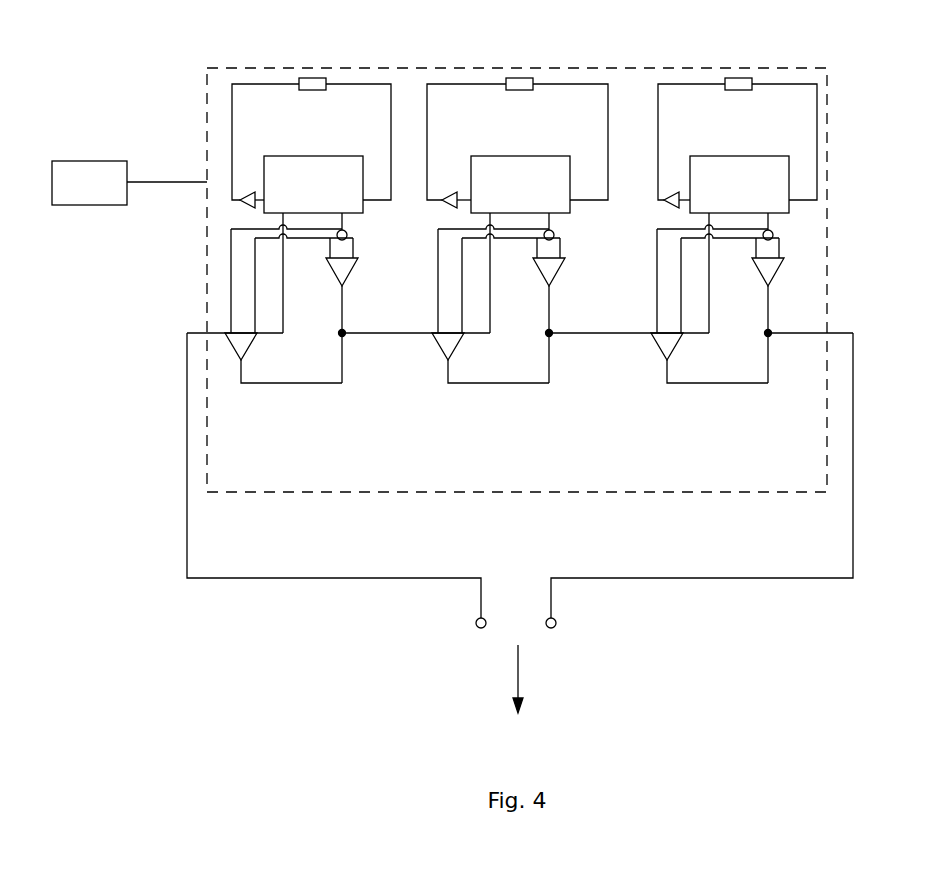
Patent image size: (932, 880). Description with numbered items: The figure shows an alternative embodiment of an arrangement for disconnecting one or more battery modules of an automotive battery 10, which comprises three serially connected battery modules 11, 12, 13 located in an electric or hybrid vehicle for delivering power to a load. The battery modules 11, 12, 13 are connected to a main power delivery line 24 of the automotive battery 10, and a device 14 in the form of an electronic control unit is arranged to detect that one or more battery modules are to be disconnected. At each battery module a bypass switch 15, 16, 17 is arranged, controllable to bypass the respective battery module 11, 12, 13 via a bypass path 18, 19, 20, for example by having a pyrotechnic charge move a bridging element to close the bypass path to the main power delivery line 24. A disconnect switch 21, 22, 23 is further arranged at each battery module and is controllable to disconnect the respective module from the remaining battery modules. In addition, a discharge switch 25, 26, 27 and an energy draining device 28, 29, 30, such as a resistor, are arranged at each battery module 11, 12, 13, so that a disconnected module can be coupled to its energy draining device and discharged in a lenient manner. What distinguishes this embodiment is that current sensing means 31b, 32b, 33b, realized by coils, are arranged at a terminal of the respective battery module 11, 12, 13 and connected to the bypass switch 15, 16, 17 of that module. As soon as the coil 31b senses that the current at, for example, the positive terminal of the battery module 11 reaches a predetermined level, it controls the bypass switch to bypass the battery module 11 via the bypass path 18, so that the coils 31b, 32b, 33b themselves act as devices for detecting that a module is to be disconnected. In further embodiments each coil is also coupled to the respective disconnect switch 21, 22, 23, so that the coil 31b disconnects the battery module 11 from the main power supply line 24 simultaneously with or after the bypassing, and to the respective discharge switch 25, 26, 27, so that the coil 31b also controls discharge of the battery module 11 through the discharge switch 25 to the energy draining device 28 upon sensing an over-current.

The automotive battery 10 is at (817, 75).
The first battery module 11 is at (340, 167).
The second battery module 12 is at (547, 167).
The third battery module 13 is at (765, 167).
The device for detecting that battery modules are to be disconnected 14 is at (105, 170).
The bypass switch 15 is at (238, 330).
The bypass switch 16 is at (445, 330).
The bypass switch 17 is at (664, 330).
The bypass path 18 is at (303, 385).
The bypass path 19 is at (505, 385).
The bypass path 20 is at (725, 385).
The disconnect switch 21 is at (352, 264).
The disconnect switch 22 is at (559, 264).
The disconnect switch 23 is at (779, 265).
The main power delivery line 24 is at (838, 332).
The discharge switch 25 is at (242, 197).
The discharge switch 26 is at (445, 197).
The discharge switch 27 is at (668, 197).
The energy draining device 28 is at (311, 72).
The energy draining device 29 is at (511, 72).
The energy draining device 30 is at (737, 72).
The current sensing means 31b is at (350, 234).
The current sensing means 32b is at (557, 234).
The current sensing means 33b is at (776, 234).